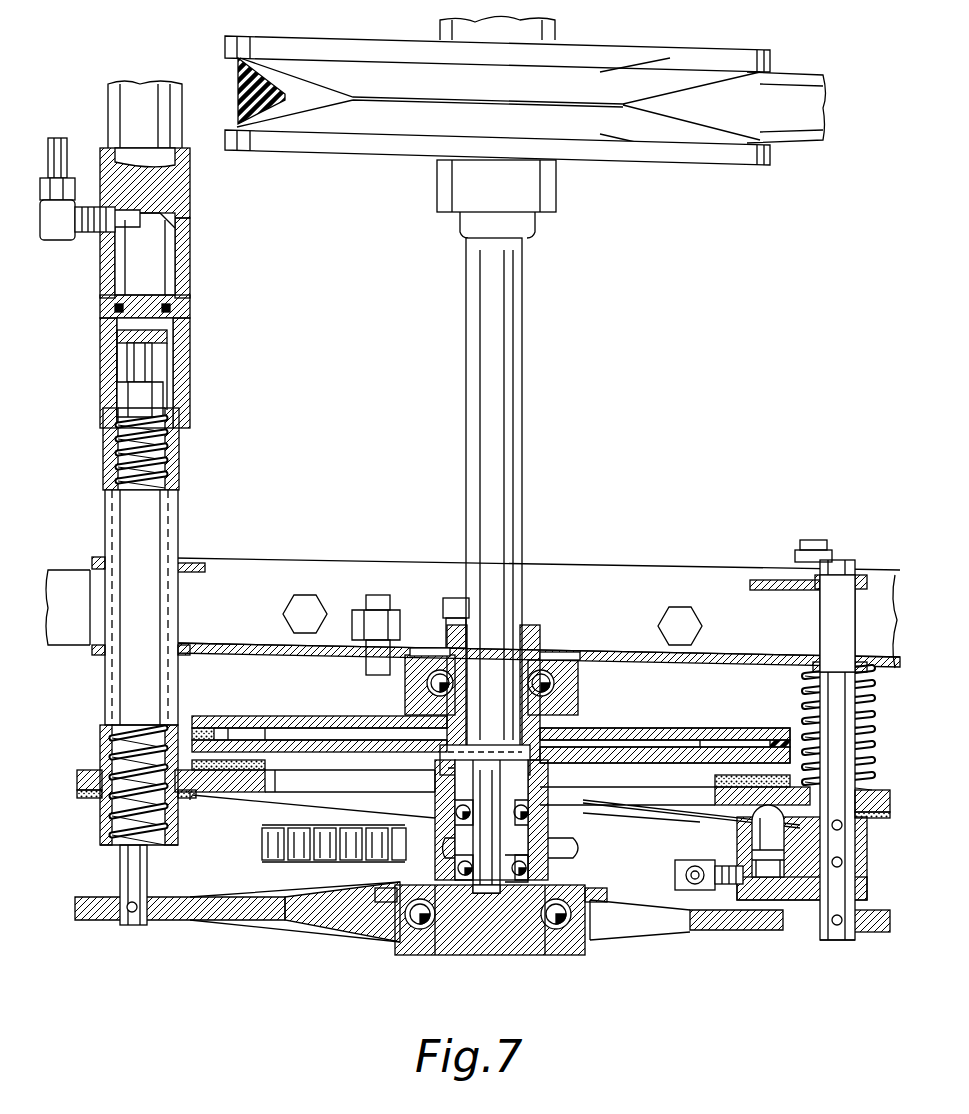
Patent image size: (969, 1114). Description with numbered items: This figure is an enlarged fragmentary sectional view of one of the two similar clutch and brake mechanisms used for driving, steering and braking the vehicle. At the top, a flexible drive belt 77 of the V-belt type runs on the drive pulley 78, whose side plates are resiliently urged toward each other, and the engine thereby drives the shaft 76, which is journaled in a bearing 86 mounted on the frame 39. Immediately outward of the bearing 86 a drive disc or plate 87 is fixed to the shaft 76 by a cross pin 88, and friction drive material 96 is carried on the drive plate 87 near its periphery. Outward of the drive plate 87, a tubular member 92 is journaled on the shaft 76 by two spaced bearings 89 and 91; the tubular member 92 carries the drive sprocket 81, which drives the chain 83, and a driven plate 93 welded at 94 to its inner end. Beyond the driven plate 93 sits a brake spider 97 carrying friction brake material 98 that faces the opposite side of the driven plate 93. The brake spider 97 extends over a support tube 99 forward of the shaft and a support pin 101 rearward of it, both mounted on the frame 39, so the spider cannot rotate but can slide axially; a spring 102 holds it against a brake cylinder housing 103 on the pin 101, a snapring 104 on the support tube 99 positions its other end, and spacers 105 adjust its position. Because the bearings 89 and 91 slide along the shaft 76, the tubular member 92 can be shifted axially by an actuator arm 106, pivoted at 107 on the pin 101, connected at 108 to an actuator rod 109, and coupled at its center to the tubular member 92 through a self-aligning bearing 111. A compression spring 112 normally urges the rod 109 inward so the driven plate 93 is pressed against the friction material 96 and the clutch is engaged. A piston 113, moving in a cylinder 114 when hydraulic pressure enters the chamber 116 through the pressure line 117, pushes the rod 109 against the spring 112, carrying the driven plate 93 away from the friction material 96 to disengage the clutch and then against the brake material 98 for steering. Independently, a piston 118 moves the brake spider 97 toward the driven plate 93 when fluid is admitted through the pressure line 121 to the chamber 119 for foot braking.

The frame 39 is at (645, 575).
The shaft 76 is at (522, 408).
The flexible drive belt 77 is at (245, 75).
The drive pulley 78 is at (636, 158).
The drive sprocket 81 is at (575, 845).
The chain 83 is at (278, 862).
The bearing 86 is at (566, 658).
The drive disc or plate 87 is at (619, 728).
The cross pin 88 is at (454, 749).
The bearing 89 is at (548, 825).
The bearing 91 is at (532, 868).
The tubular member 92 is at (506, 940).
The driven plate 93 is at (648, 768).
The weld 94 is at (548, 778).
The friction drive material 96 is at (215, 728).
The brake spider 97 is at (645, 804).
The friction brake material 98 is at (265, 765).
The support tube 99 is at (108, 676).
The support pin 101 is at (856, 605).
The spring 102 is at (862, 722).
The brake cylinder housing 103 is at (862, 865).
The snapring 104 is at (178, 805).
The spacers 105 is at (80, 800).
The actuator arm 106 is at (688, 932).
The pivot 107 is at (838, 935).
The pivotal connection 108 is at (132, 925).
The actuator rod 109 is at (148, 372).
The bearing 111 is at (428, 940).
The compression spring 112 is at (112, 740).
The piston 113 is at (178, 304).
The cylinder 114 is at (183, 340).
The cylinder chamber 116 is at (158, 258).
The pressure line 117 is at (60, 140).
The piston 118 is at (760, 832).
The chamber 119 is at (762, 895).
The pressure line 121 is at (675, 871).